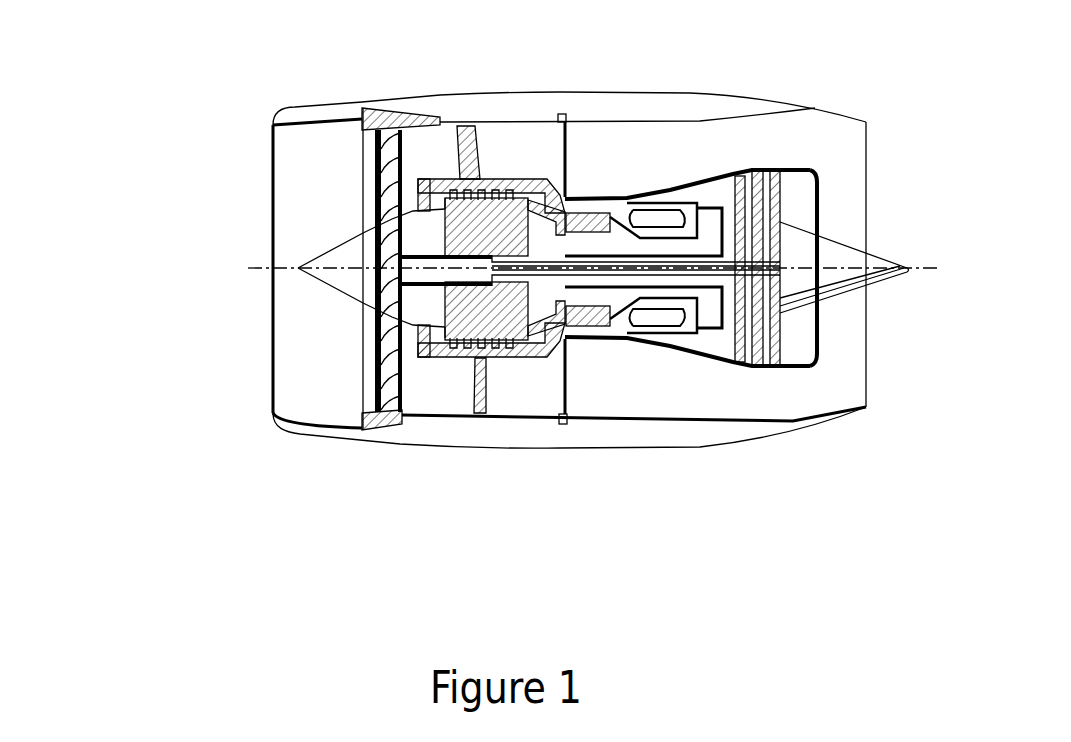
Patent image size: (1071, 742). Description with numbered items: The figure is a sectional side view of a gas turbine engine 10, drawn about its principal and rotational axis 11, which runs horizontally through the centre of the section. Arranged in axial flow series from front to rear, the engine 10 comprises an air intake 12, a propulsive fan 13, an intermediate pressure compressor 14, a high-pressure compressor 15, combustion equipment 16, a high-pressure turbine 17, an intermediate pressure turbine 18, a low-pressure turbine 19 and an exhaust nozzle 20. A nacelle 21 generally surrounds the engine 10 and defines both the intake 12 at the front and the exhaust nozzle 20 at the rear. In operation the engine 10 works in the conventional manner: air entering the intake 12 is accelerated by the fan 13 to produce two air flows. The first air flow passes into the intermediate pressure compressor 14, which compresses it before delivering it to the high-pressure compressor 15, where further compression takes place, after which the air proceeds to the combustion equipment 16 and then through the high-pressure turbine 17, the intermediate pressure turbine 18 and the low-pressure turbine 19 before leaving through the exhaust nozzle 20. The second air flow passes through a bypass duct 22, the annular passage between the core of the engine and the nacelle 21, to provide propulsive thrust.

The gas turbine engine 10 is at (104, 112).
The principal and rotational axis 11 is at (262, 268).
The air intake 12 is at (316, 121).
The propulsive fan 13 is at (380, 386).
The intermediate pressure compressor 14 is at (480, 340).
The high-pressure compressor 15 is at (590, 218).
The combustion equipment 16 is at (655, 320).
The high-pressure turbine 17 is at (682, 330).
The intermediate pressure turbine 18 is at (712, 200).
The low-pressure turbine 19 is at (735, 345).
The exhaust nozzle 20 is at (868, 390).
The nacelle 21 is at (698, 97).
The bypass duct 22 is at (512, 269).